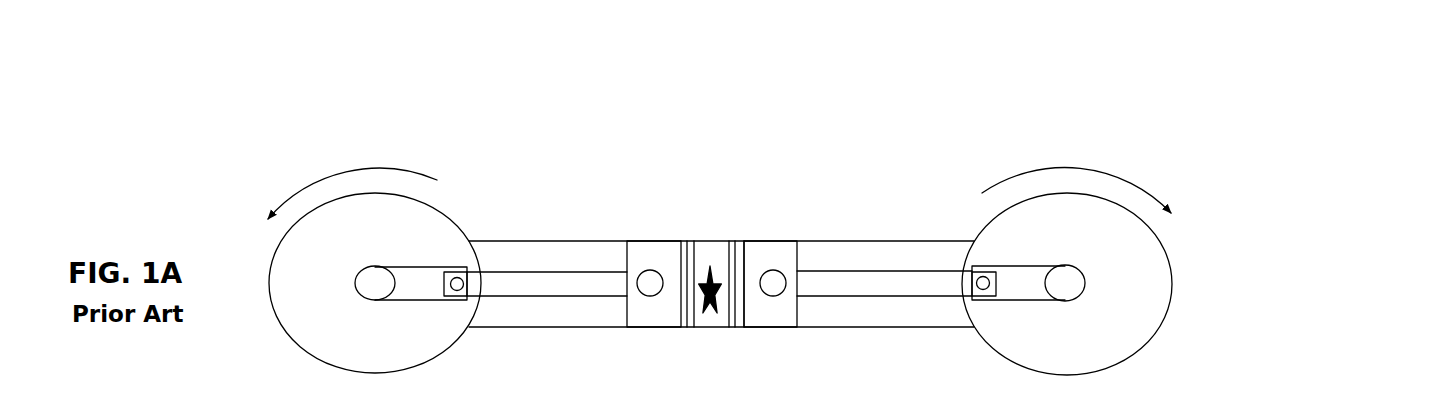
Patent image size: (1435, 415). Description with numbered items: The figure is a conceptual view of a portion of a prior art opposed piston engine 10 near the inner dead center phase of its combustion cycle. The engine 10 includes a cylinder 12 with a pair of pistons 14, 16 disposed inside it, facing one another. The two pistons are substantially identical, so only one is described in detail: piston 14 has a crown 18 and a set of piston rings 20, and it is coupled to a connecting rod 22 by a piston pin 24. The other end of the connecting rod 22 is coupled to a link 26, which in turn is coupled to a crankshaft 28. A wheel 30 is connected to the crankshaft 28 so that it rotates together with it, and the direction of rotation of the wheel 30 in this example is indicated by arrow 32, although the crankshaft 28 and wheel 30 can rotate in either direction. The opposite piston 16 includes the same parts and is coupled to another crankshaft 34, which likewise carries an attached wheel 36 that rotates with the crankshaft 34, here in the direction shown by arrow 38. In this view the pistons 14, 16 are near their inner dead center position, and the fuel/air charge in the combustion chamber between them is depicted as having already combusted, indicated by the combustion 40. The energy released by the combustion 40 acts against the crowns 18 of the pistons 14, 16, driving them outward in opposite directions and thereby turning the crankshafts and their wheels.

The opposed piston engine 10 is at (1264, 140).
The cylinder 12 is at (859, 239).
The piston 14 is at (767, 239).
The piston 16 is at (659, 239).
The crown 18 is at (730, 264).
The piston rings 20 is at (737, 328).
The connecting rod 22 is at (868, 300).
The piston pin 24 is at (774, 290).
The link 26 is at (1020, 285).
The crankshaft 28 is at (1091, 283).
The wheel 30 is at (1162, 318).
The arrow 32 is at (1093, 168).
The crankshaft 34 is at (363, 297).
The wheel 36 is at (278, 318).
The arrow 38 is at (350, 170).
The combustion 40 is at (710, 265).